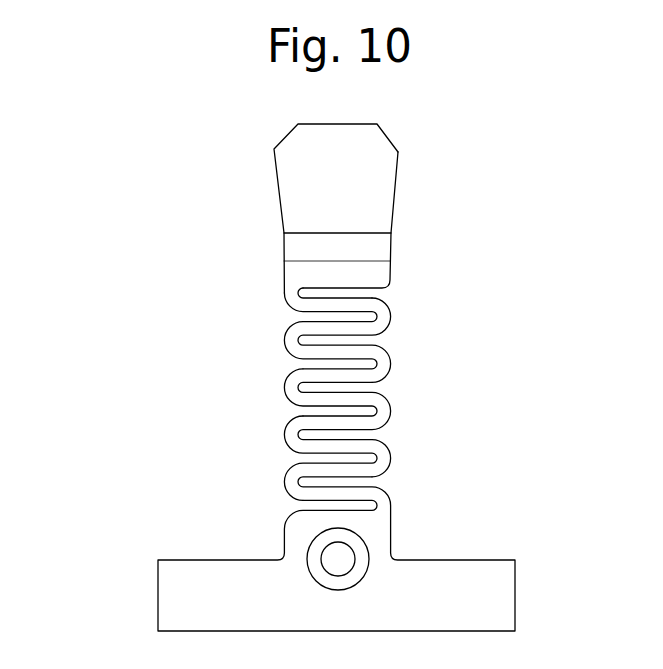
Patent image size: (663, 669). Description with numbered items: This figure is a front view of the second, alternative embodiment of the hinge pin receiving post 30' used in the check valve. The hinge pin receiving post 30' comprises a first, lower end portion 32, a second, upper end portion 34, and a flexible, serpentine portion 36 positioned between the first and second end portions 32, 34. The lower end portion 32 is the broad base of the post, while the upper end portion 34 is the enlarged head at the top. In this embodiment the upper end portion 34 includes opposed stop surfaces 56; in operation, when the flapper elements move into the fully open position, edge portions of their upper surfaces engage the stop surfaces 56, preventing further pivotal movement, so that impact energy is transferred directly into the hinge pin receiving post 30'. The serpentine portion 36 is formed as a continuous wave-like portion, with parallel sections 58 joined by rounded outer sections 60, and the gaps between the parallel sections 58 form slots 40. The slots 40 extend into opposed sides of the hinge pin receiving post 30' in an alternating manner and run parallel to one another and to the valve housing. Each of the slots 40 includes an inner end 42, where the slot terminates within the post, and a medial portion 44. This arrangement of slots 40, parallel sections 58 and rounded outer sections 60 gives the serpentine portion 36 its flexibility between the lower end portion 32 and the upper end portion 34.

The hinge pin receiving post 30' is at (296, 372).
The second, upper end portion 34 is at (400, 155).
The stop surfaces 56 is at (398, 192).
The medial portion 44 is at (317, 292).
The flexible, serpentine portion 36 is at (390, 360).
The inner end 42 is at (383, 435).
The first, lower end portion 32 is at (497, 558).
The rounded outer sections 60 is at (285, 480).
The parallel sections 58 is at (312, 408).
The slots 40 is at (317, 368).